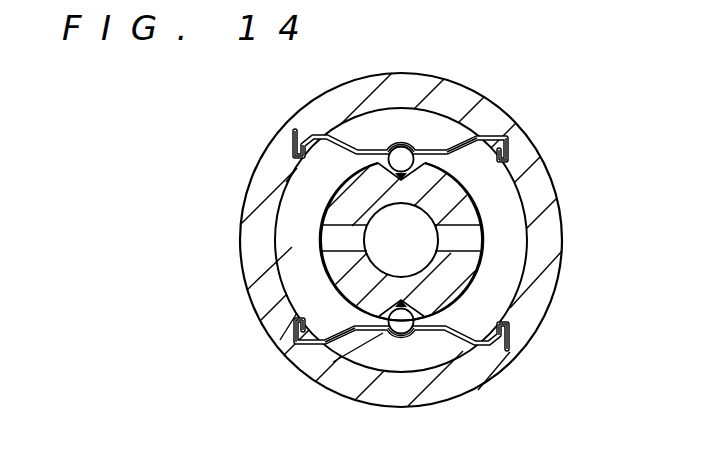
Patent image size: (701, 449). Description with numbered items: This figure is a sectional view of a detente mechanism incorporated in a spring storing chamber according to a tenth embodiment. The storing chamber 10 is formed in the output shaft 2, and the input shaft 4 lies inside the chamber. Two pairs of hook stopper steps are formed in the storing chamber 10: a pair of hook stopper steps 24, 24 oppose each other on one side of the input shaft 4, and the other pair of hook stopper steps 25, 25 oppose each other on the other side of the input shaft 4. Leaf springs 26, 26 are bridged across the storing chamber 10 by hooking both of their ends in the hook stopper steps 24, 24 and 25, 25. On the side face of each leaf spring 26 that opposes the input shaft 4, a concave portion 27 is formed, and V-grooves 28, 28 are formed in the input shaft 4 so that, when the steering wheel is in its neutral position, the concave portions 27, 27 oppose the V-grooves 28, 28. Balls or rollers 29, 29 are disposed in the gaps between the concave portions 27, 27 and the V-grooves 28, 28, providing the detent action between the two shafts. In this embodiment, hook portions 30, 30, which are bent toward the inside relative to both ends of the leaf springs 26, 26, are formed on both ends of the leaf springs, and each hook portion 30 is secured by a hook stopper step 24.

The output shaft 2 is at (545, 278).
The input shaft 4 is at (335, 210).
The storing chamber 10 is at (512, 229).
The hook stopper step 24 is at (294, 131).
The hook stopper step 25 is at (297, 345).
The leaf spring 26 is at (419, 146).
The concave portion 27 is at (458, 150).
The V-groove 28 is at (460, 182).
The ball or roller 29 is at (399, 154).
The hook portion 30 is at (297, 151).